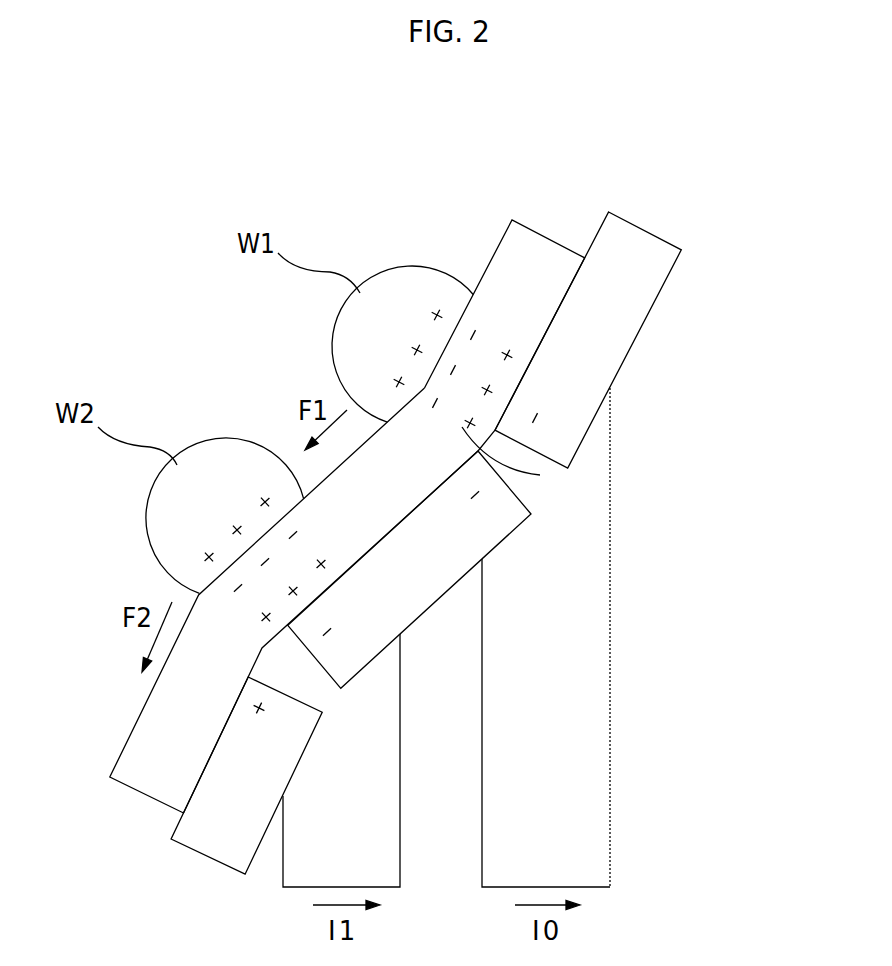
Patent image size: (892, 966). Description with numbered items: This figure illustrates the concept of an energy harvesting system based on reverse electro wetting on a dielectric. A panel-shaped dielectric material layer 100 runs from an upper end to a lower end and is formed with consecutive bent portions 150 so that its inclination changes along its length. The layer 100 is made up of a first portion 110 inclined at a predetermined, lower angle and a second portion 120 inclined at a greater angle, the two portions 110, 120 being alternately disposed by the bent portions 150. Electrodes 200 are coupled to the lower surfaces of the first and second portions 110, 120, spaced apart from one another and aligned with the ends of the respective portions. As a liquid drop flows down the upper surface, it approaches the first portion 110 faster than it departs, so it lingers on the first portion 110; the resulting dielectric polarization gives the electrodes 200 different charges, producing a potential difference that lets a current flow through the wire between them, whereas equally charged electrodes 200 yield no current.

The dielectric material layer 100 is at (336, 448).
The first portion 110 is at (367, 517).
The second portion 120 is at (500, 272).
The bent portion 150 is at (540, 475).
The electrode 200 is at (643, 238).